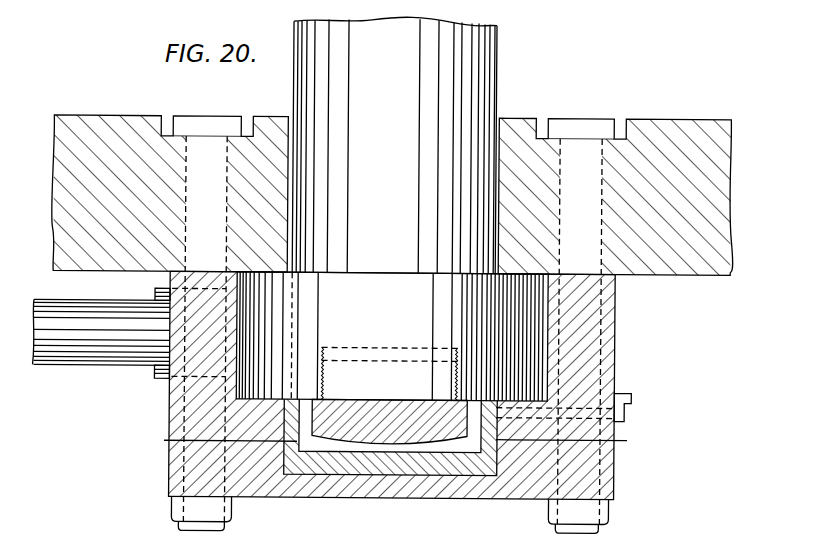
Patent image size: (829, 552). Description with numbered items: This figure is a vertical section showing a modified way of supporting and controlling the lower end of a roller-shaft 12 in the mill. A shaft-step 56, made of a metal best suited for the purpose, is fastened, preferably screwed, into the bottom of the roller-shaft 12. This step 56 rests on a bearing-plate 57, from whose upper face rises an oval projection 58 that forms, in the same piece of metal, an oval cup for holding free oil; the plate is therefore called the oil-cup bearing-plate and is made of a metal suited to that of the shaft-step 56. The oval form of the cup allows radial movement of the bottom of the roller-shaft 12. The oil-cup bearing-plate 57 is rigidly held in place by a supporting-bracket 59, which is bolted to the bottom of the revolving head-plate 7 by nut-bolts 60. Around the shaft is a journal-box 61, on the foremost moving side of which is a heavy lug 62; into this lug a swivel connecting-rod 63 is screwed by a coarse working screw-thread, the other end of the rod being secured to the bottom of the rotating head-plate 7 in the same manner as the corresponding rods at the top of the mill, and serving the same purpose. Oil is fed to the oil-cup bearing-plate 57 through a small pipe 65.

The revolving head-plate 7 is at (89, 124).
The nut-bolts 60 is at (202, 125).
The roller-shaft 12 is at (394, 144).
The journal-box 61 is at (392, 336).
The bearing-plate 57 is at (355, 456).
The shaft-step 56 is at (410, 432).
The oval projection 58 is at (394, 440).
The small pipe 65 is at (632, 405).
The supporting-bracket 59 is at (266, 498).
The swivel connecting-rod 63 is at (68, 368).
The heavy lug 62 is at (163, 381).